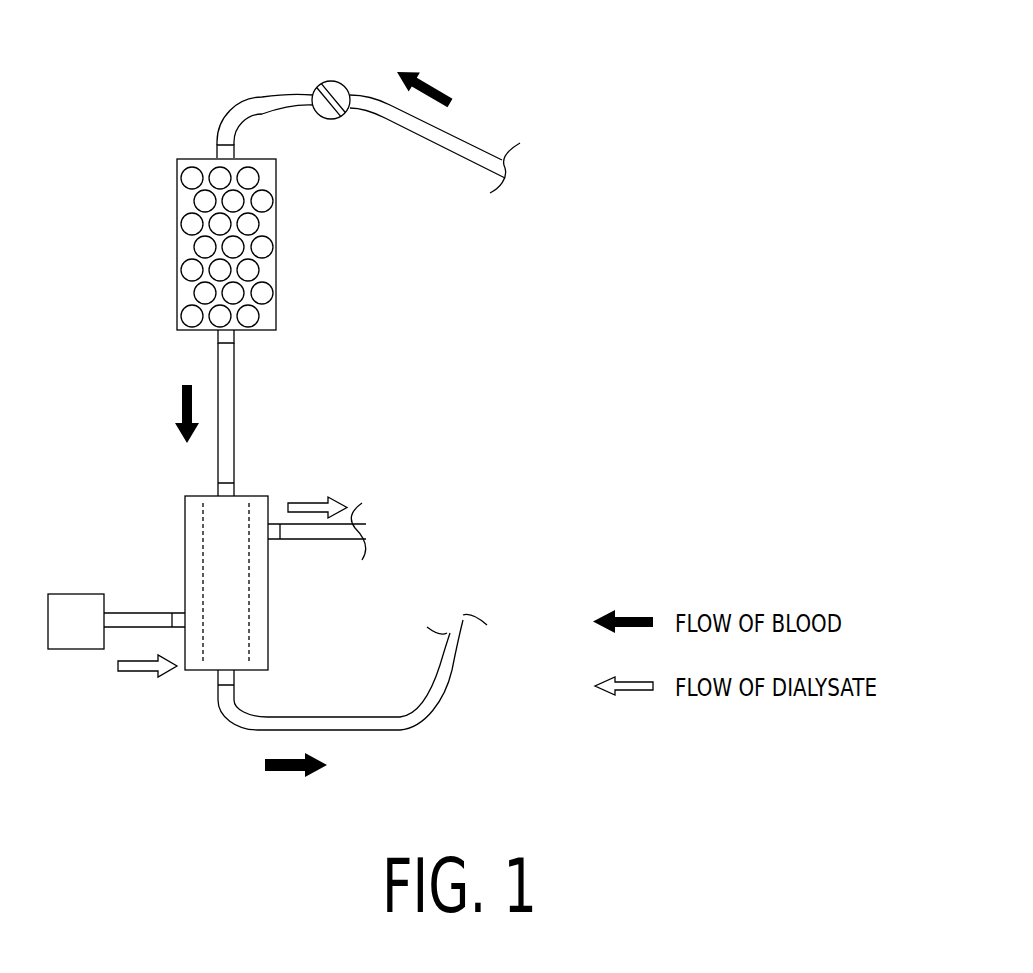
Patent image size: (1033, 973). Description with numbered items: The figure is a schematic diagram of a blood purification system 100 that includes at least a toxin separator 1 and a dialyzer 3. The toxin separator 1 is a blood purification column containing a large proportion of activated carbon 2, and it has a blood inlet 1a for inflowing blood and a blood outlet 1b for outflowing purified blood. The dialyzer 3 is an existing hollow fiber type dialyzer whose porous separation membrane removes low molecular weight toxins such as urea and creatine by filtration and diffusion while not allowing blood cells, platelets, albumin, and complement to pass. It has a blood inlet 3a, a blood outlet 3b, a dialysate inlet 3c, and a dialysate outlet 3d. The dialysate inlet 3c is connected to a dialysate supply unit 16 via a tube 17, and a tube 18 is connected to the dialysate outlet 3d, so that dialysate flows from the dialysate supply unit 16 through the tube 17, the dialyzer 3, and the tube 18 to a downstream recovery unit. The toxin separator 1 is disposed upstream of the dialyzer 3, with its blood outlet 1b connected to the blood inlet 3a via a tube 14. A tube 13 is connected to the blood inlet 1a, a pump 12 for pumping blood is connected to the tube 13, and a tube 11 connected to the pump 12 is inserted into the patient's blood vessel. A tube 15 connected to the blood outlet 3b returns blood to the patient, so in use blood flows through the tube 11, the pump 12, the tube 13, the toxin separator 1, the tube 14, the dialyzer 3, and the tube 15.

The blood purification system 100 is at (82, 222).
The toxin separator 1 is at (277, 250).
The blood inlet 1a is at (236, 153).
The blood outlet 1b is at (234, 336).
The activated carbon 2 is at (268, 200).
The dialyzer 3 is at (185, 525).
The blood inlet 3a is at (235, 492).
The blood outlet 3b is at (234, 674).
The dialysate inlet 3c is at (178, 613).
The dialysate outlet 3d is at (278, 540).
The tube 11 is at (483, 150).
The pump 12 is at (333, 80).
The tube 13 is at (258, 96).
The tube 14 is at (235, 407).
The tube 15 is at (380, 732).
The dialysate supply unit 16 is at (80, 594).
The tube 17 is at (135, 613).
The tube 18 is at (340, 540).